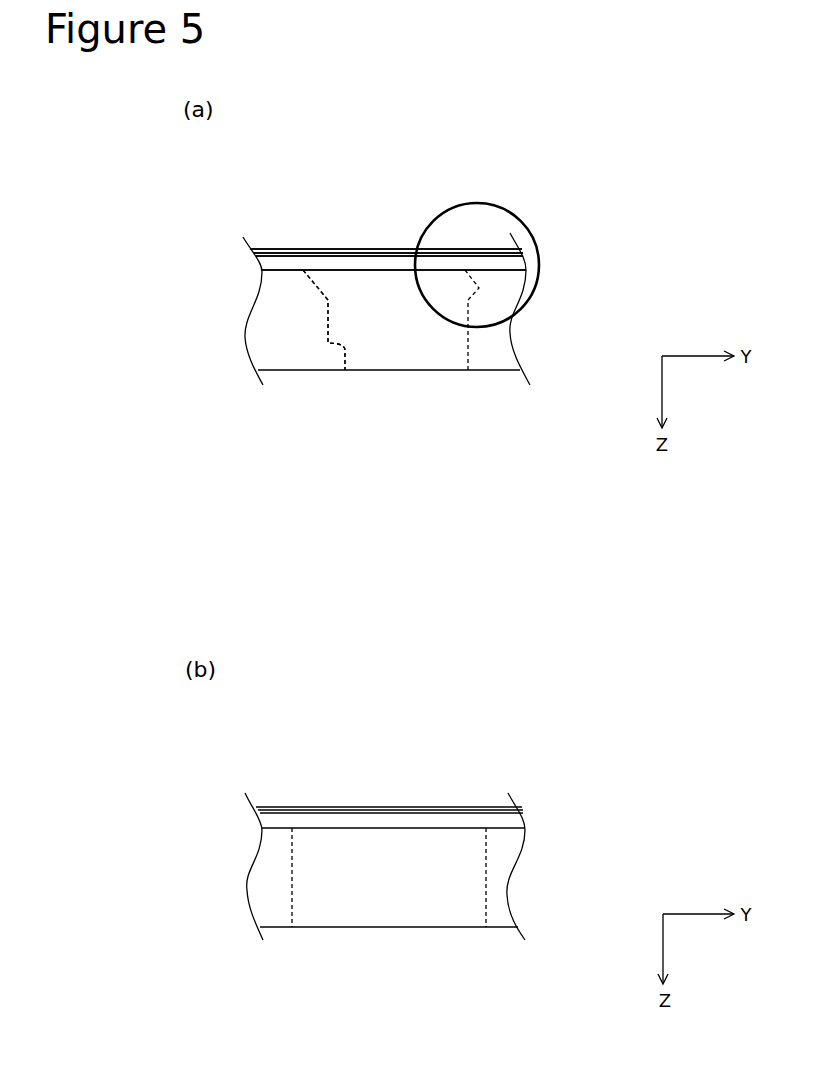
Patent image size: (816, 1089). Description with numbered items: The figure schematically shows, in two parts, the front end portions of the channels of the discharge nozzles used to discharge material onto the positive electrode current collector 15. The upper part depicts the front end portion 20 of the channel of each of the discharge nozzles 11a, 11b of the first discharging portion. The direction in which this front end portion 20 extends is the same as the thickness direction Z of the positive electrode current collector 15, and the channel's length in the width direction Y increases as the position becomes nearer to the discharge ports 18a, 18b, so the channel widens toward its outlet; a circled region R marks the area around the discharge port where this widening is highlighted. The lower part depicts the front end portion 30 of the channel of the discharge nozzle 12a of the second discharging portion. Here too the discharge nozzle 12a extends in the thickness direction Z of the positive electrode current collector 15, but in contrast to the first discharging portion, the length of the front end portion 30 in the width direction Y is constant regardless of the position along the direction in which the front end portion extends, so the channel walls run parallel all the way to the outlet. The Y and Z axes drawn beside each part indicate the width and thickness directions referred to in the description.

The discharge nozzle 11a is at (384, 228).
The discharge nozzle 11b is at (386, 252).
The discharge nozzle 12a is at (404, 795).
The positive electrode current collector 15 is at (280, 249).
The discharge port 18a is at (303, 249).
The discharge port 18b is at (324, 320).
The front end portion of the channel 20 is at (465, 249).
The front end portion of the channel 30 is at (292, 855).
The enlarged region R is at (523, 218).